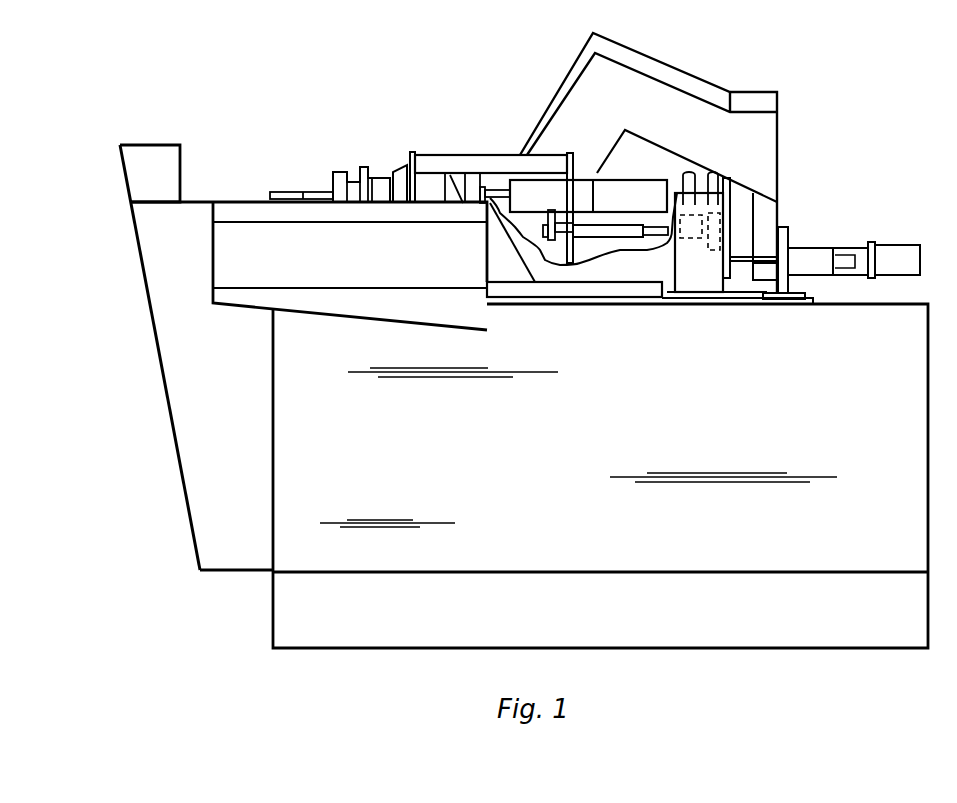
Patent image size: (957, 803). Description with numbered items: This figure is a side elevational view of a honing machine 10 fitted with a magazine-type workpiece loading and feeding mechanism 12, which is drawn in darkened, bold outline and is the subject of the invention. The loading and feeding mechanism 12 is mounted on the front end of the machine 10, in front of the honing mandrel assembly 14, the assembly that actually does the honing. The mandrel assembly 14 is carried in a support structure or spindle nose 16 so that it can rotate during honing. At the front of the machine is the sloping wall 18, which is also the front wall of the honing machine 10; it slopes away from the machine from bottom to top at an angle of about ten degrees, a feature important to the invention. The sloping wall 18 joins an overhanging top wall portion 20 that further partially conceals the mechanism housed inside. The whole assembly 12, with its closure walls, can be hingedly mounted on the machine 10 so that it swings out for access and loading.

The honing machine 10 is at (282, 95).
The workpiece loading and feeding mechanism 12 is at (158, 340).
The honing mandrel assembly 14 is at (287, 192).
The spindle nose 16 is at (354, 185).
The sloping wall 18 is at (145, 278).
The overhanging top wall portion 20 is at (150, 145).